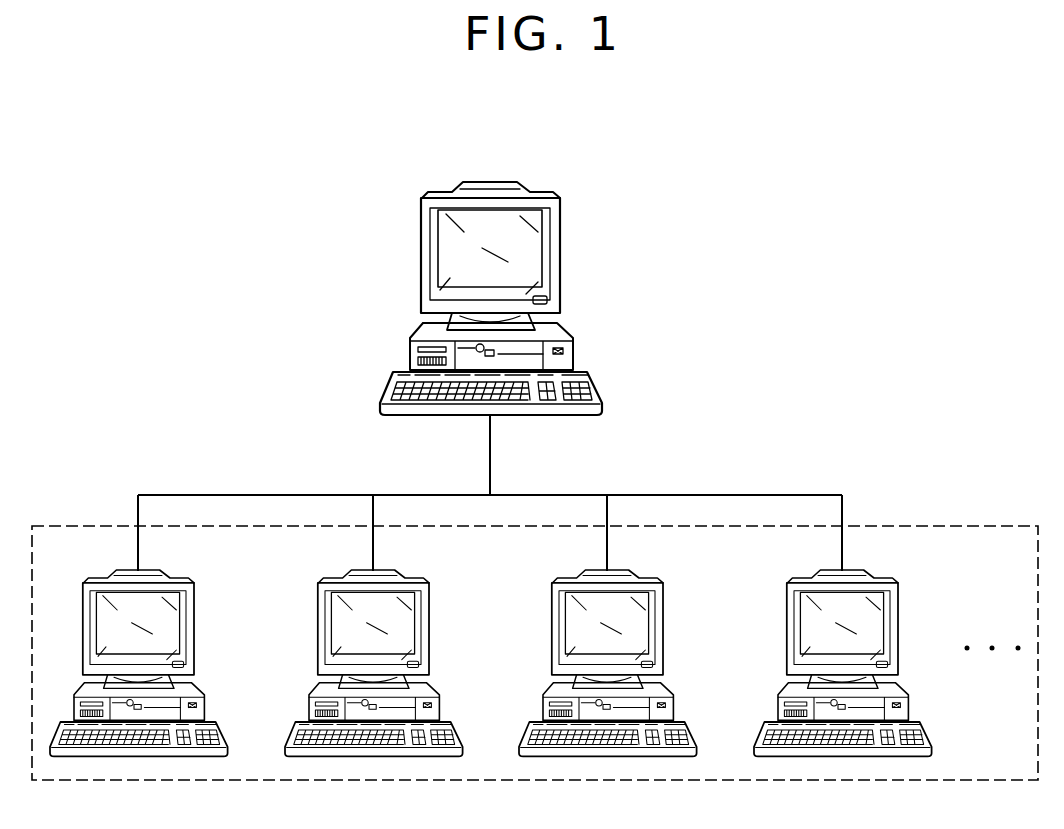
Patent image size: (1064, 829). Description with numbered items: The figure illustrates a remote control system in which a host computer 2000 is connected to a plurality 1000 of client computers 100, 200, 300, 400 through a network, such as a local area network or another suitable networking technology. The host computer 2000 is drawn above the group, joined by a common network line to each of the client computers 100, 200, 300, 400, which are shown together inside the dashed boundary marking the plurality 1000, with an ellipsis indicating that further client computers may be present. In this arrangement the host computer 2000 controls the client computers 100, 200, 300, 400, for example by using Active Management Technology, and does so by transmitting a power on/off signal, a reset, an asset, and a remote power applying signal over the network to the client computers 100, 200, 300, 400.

The client computer 100 is at (142, 757).
The client computer 200 is at (375, 757).
The client computer 300 is at (608, 757).
The client computer 400 is at (844, 757).
The plurality of client computers 1000 is at (953, 526).
The host computer 2000 is at (488, 181).